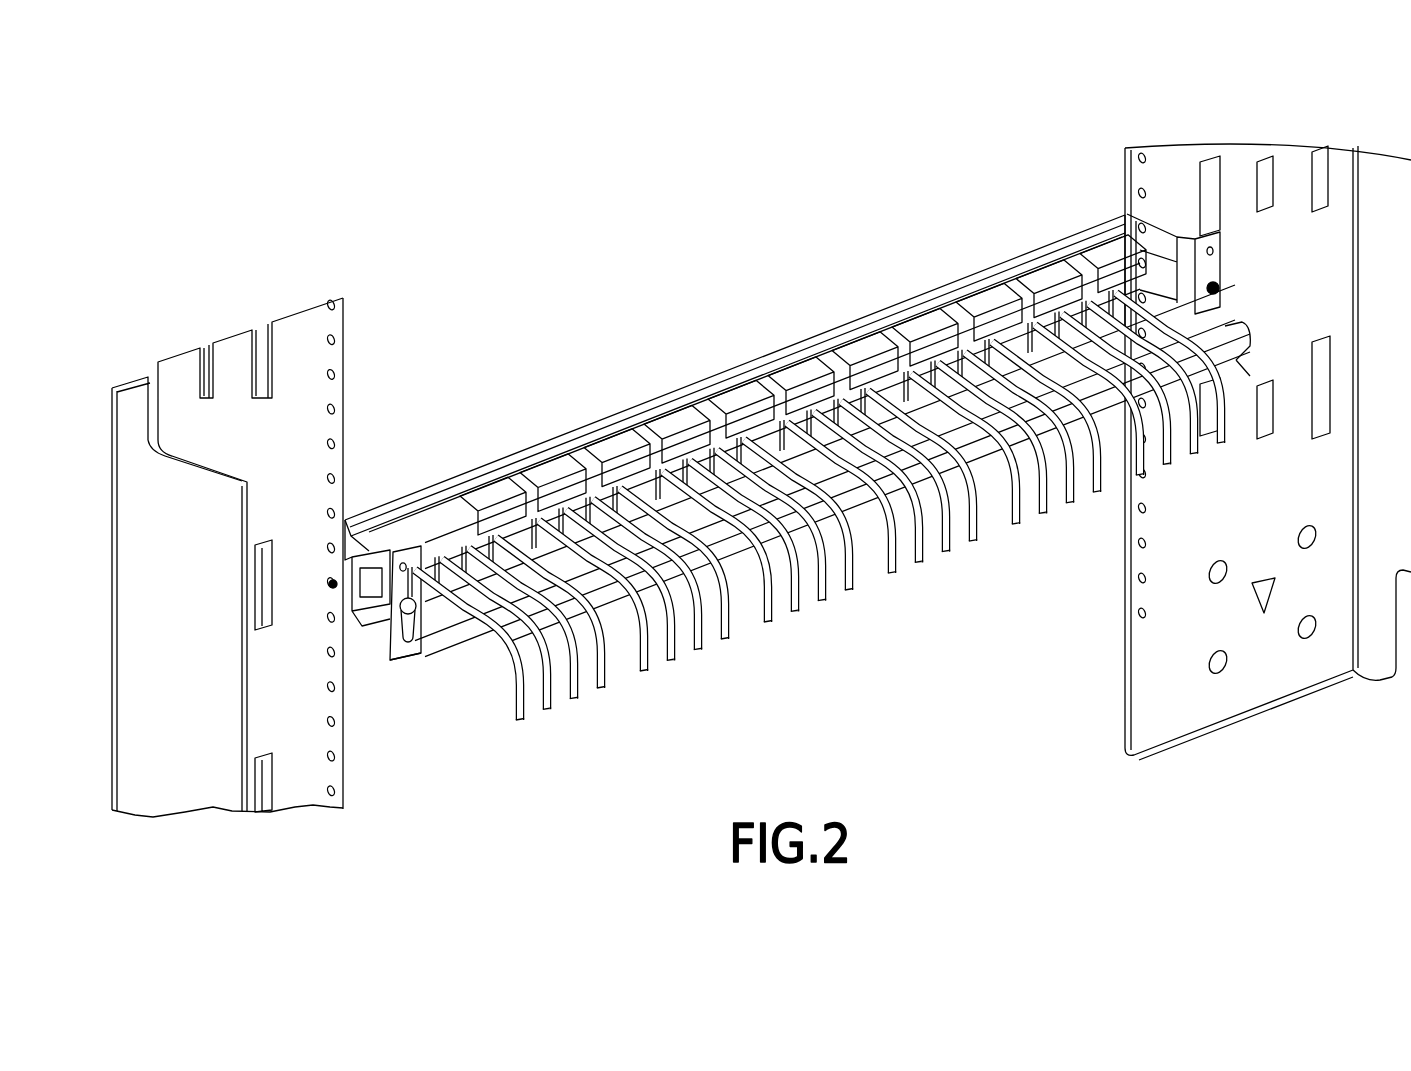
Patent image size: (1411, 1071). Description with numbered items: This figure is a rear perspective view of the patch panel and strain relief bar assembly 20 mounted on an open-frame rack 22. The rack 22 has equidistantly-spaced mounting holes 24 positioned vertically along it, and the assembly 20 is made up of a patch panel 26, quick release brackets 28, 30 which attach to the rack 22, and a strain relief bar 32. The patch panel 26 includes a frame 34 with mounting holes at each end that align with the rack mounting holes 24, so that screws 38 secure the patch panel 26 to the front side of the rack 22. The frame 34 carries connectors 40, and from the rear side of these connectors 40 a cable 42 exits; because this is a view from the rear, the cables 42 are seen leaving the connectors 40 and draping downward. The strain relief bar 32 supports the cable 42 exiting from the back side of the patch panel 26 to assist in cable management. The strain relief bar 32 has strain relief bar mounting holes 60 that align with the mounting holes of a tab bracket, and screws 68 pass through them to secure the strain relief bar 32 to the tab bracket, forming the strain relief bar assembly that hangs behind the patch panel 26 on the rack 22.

The patch panel and strain relief bar assembly 20 is at (797, 492).
The rack 22 is at (298, 305).
The mounting holes 24 is at (343, 370).
The patch panel 26 is at (702, 380).
The quick release bracket 28 is at (1195, 240).
The quick release bracket 30 is at (420, 548).
The strain relief bar 32 is at (450, 612).
The frame 34 is at (613, 425).
The screws 38 is at (334, 590).
The connectors 40 is at (945, 325).
The cable 42 is at (527, 723).
The strain relief bar mounting holes 60 is at (410, 645).
The screws 68 is at (425, 612).